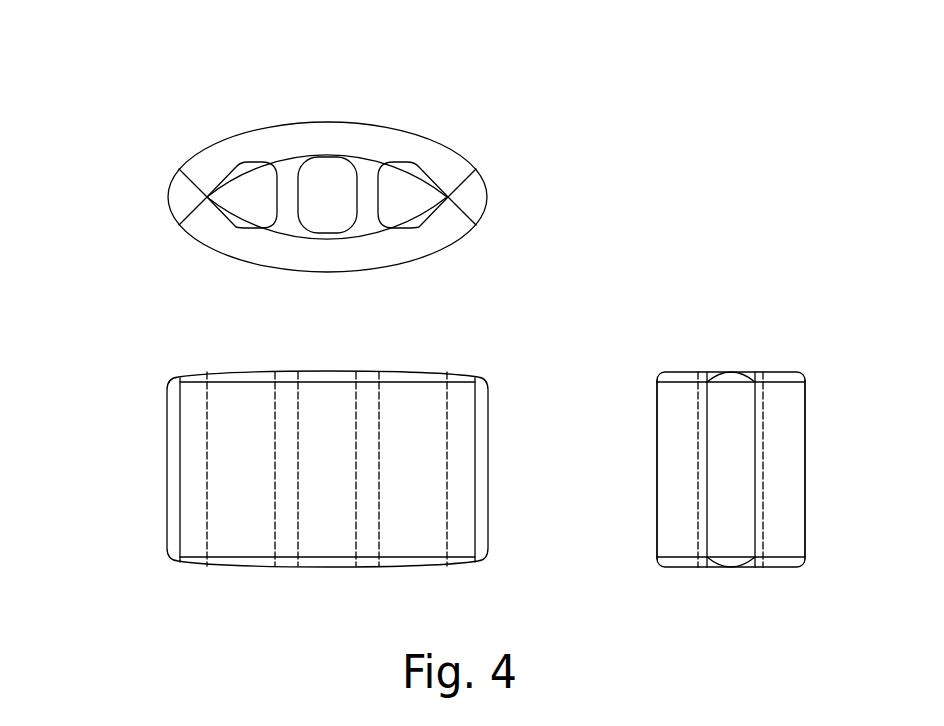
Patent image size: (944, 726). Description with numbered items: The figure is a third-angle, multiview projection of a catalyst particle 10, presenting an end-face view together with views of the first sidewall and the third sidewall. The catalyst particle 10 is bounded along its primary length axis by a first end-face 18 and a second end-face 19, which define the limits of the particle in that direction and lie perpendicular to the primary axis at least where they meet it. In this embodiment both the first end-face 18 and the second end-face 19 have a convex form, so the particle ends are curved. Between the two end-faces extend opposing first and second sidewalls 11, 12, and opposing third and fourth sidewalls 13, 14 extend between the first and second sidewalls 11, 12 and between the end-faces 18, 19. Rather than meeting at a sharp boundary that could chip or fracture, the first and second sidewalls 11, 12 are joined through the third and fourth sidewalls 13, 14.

The catalyst particle 10 is at (142, 465).
The first sidewall 11 is at (327, 273).
The second sidewall 12 is at (323, 121).
The third sidewall 13 is at (488, 197).
The fourth sidewall 14 is at (168, 197).
The first end-face 18 is at (360, 151).
The second end-face 19 is at (465, 562).